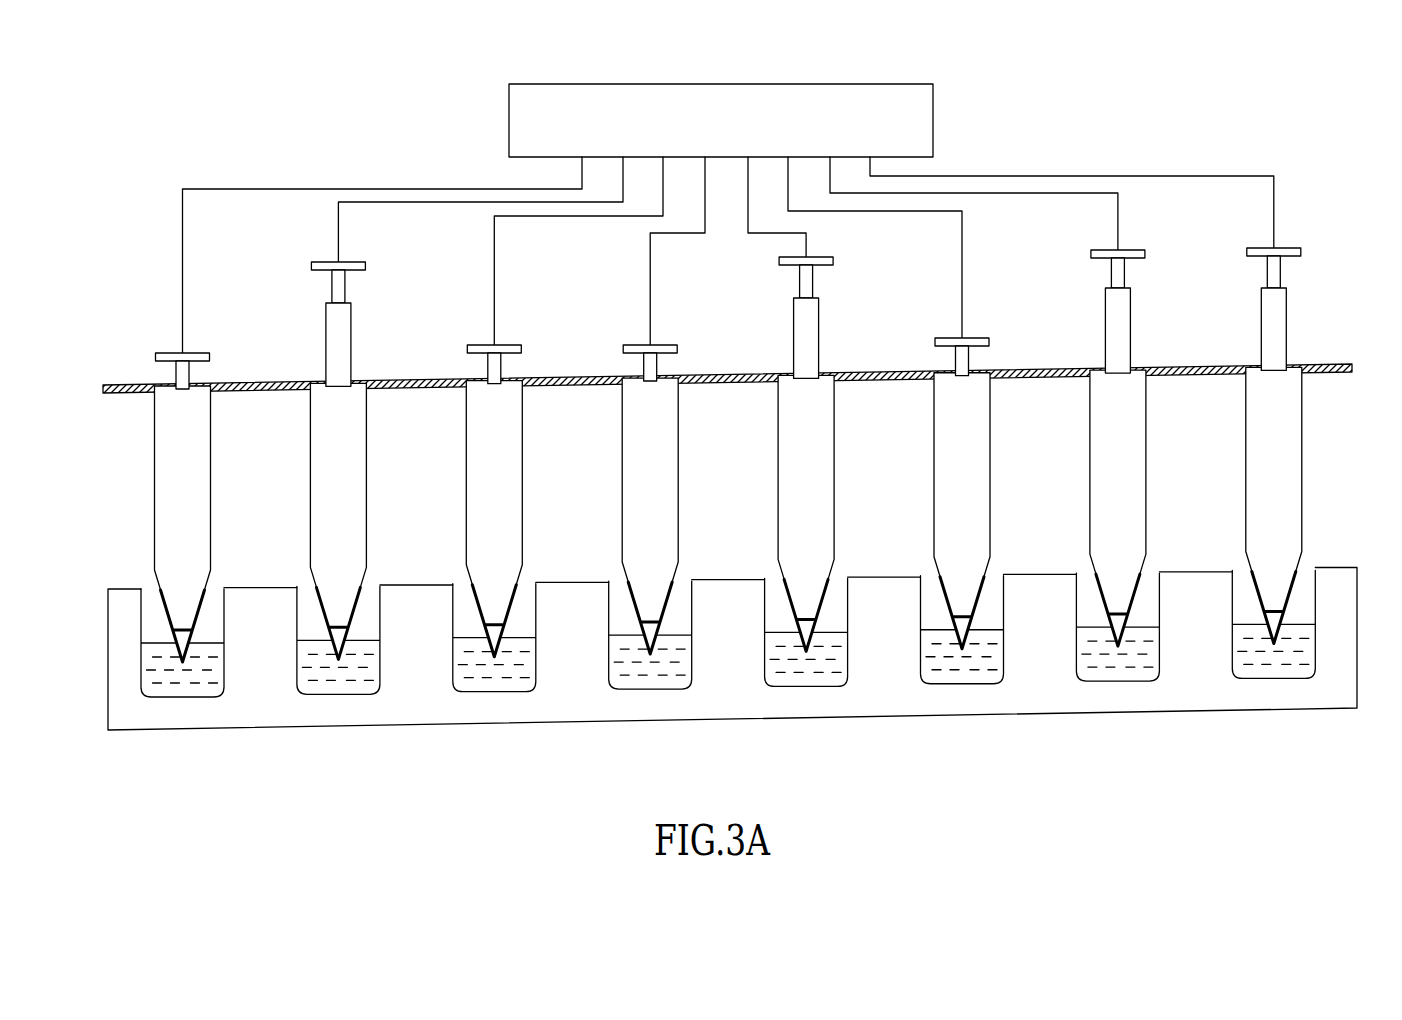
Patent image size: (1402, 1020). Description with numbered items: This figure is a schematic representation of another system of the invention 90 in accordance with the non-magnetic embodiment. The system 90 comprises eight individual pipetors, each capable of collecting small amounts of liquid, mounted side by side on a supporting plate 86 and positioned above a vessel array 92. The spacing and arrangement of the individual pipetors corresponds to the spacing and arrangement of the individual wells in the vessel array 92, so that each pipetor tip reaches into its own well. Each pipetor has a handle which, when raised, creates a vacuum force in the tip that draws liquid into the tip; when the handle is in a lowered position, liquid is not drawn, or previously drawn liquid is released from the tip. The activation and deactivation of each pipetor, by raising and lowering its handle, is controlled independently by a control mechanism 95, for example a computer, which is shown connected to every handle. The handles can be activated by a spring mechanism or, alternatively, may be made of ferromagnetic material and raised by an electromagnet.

The support plate 86 is at (1325, 367).
The system 90 is at (1238, 122).
The vessel array 92 is at (232, 758).
The control mechanism 95 is at (522, 118).